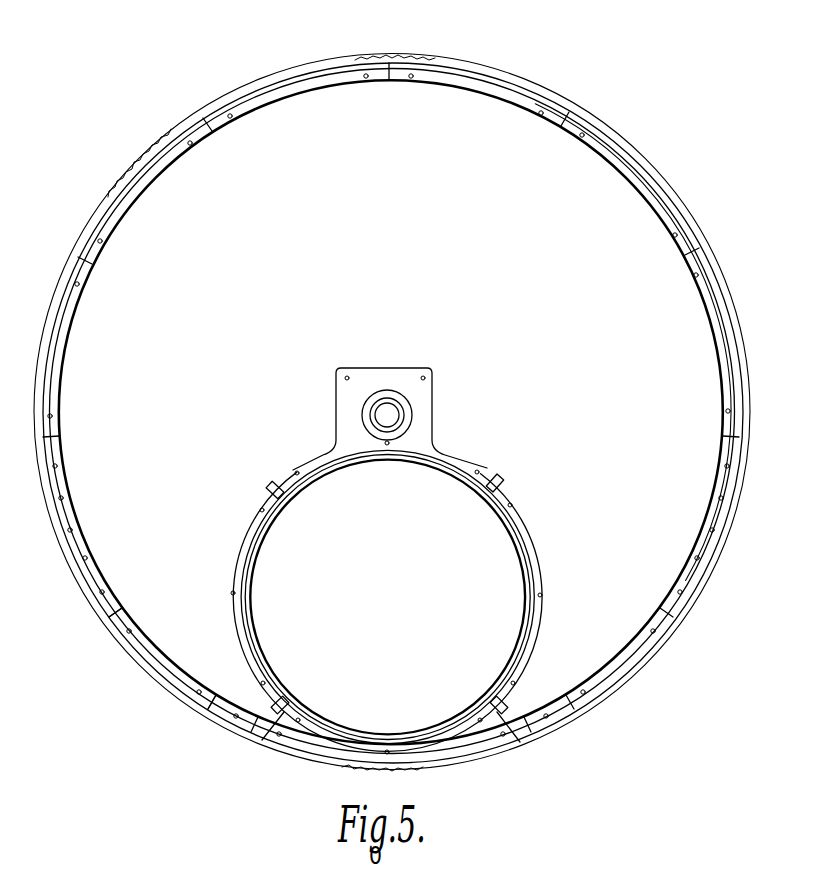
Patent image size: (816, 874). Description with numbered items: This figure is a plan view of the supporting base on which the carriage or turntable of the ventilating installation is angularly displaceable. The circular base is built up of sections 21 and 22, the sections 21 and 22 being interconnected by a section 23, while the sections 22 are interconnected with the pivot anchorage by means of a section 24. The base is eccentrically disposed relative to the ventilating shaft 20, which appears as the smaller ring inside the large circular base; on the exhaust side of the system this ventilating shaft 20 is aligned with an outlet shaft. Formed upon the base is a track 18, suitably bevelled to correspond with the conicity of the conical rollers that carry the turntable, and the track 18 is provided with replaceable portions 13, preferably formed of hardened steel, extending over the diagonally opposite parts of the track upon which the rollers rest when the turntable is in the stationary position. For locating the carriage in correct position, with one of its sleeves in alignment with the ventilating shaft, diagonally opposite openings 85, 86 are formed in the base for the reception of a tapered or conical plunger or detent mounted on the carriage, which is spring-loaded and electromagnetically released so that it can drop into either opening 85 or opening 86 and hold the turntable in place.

The replaceable portions 13 is at (470, 72).
The opening 86 is at (588, 131).
The section 21 is at (60, 440).
The track 18 is at (97, 615).
The opening 85 is at (199, 699).
The section 24 is at (420, 433).
The ventilating shaft 20 is at (498, 566).
The sections 22 is at (515, 506).
The section 23 is at (279, 719).